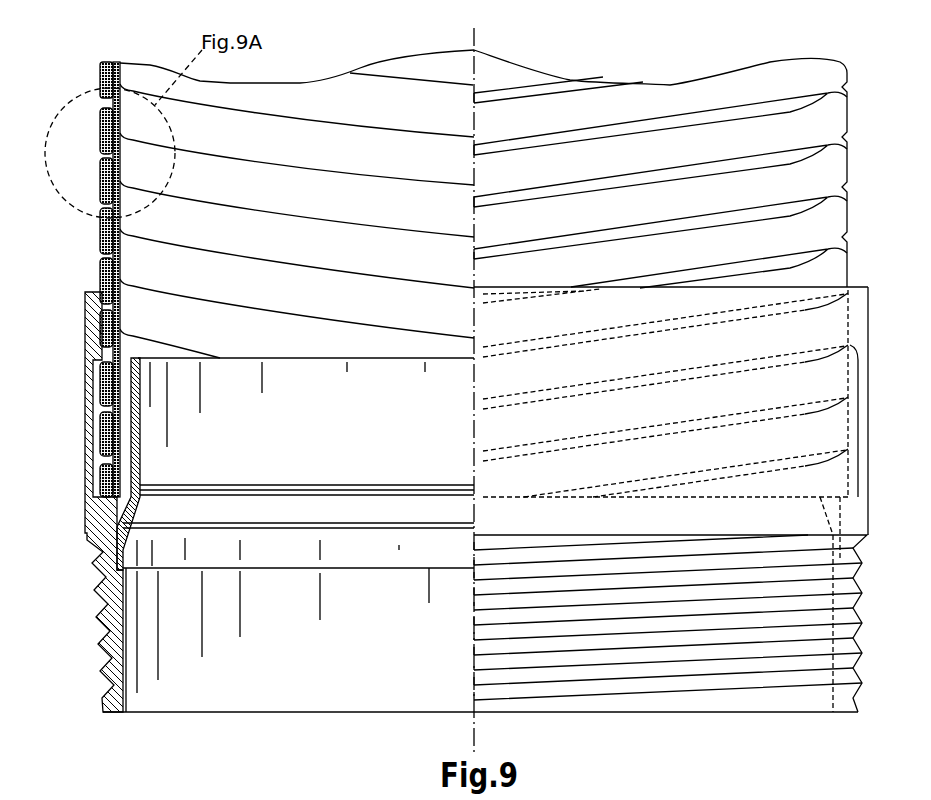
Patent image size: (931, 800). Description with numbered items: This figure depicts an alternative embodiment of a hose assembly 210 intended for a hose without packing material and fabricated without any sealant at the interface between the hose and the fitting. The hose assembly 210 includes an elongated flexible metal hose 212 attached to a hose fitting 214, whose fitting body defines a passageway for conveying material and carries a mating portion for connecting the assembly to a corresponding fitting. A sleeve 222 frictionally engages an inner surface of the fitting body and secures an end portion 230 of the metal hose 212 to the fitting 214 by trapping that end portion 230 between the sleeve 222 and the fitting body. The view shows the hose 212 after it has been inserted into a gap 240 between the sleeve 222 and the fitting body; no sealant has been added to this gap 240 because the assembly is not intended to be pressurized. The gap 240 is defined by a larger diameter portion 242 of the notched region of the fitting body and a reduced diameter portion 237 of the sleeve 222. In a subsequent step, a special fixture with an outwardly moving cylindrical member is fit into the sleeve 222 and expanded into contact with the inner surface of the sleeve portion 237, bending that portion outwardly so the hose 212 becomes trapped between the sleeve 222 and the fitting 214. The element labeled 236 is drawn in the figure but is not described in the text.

The hose assembly 210 is at (220, 722).
The elongated flexible metal hose 212 is at (669, 147).
The hose fitting 214 is at (87, 533).
The sleeve 222 is at (140, 455).
The end portion 230 is at (102, 460).
The shoulder ring 236 is at (122, 558).
The reduced diameter portion 237 is at (140, 407).
The gap 240 is at (126, 352).
The larger diameter portion 242 is at (97, 420).